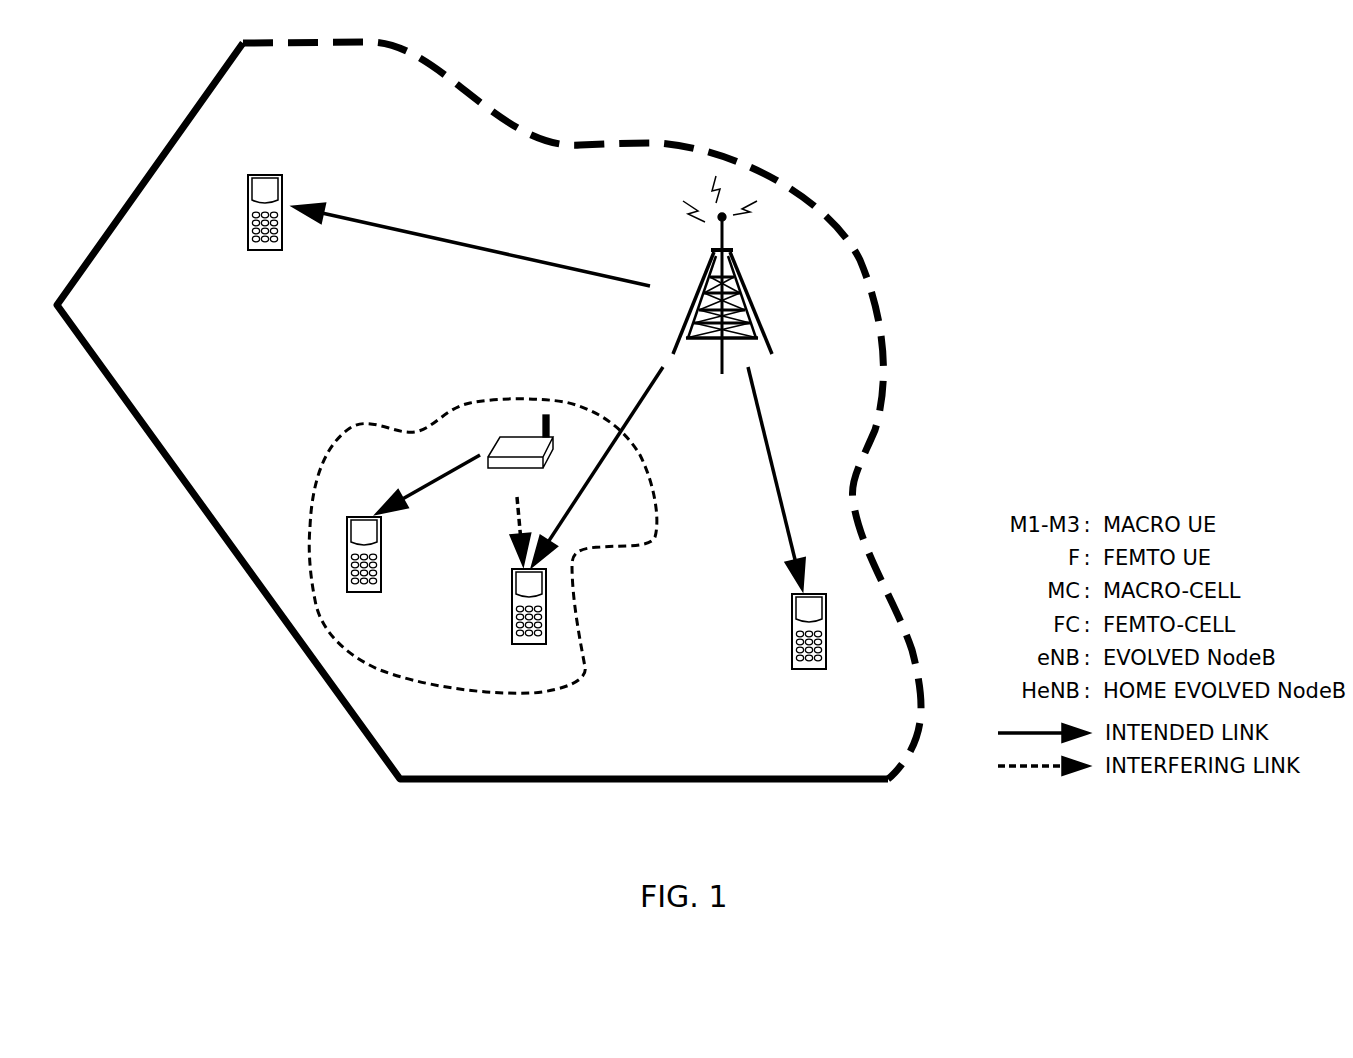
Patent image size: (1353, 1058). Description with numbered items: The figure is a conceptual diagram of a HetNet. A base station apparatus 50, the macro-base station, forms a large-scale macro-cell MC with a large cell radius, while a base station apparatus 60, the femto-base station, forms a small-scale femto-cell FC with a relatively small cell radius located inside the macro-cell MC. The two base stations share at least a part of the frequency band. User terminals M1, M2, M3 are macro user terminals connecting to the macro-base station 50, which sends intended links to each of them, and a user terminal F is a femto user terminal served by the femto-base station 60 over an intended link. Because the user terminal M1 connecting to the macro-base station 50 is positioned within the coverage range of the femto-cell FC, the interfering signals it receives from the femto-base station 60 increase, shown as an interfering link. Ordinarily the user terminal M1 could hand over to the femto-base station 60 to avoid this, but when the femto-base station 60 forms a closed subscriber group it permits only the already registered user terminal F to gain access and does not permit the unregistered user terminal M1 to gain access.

The base station apparatus 50 is at (737, 267).
The base station apparatus 60 is at (513, 437).
The user terminal M1 is at (512, 600).
The user terminal M2 is at (792, 625).
The user terminal M3 is at (248, 205).
The user terminal F is at (381, 547).
The macro-cell MC is at (172, 143).
The femto-cell FC is at (453, 408).